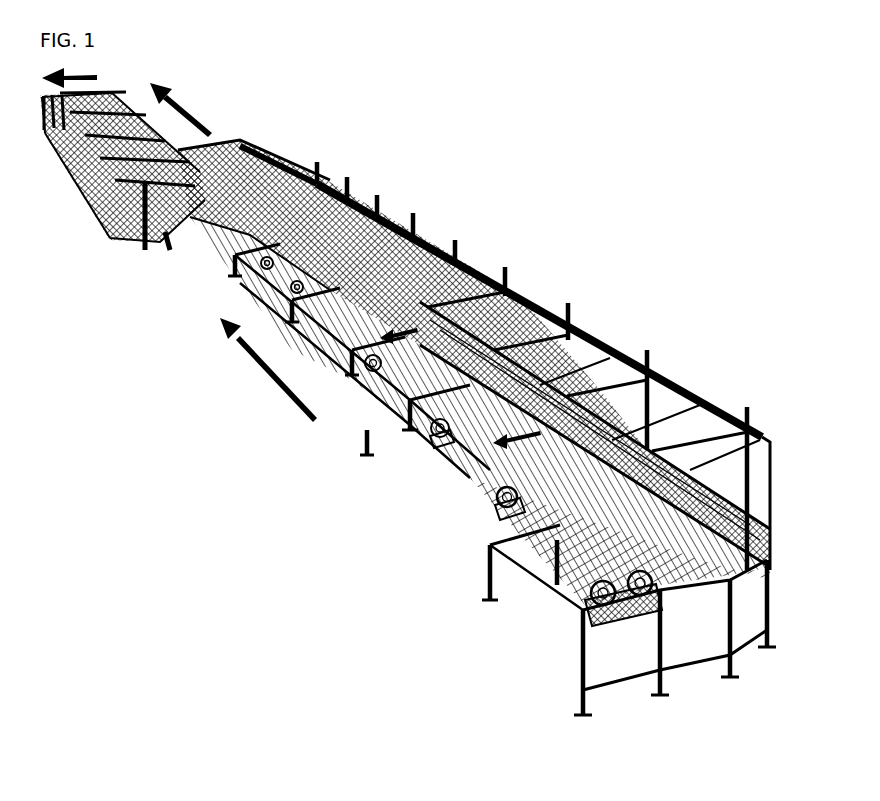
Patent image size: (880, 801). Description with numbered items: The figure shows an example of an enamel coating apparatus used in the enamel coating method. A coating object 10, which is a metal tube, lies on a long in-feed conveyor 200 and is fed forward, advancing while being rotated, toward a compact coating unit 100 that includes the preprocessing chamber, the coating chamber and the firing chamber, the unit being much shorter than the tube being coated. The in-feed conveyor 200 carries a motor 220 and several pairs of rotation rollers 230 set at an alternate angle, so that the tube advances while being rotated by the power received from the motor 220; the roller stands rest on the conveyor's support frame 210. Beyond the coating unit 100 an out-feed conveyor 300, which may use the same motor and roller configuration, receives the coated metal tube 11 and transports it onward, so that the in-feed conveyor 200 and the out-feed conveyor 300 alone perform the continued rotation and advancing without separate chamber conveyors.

The coating object 10 is at (537, 377).
The coated metal tube 11 is at (63, 133).
The coating unit 100 is at (233, 160).
The in-feed conveyor 200 is at (558, 252).
The support frame 210 is at (510, 572).
The motor 220 is at (488, 488).
The rotation rollers 230 is at (617, 577).
The out-feed conveyor 300 is at (62, 192).